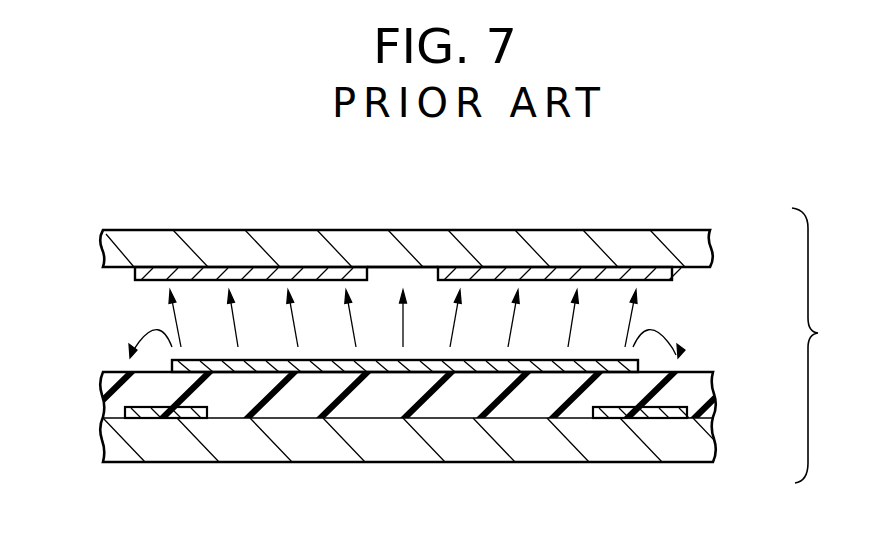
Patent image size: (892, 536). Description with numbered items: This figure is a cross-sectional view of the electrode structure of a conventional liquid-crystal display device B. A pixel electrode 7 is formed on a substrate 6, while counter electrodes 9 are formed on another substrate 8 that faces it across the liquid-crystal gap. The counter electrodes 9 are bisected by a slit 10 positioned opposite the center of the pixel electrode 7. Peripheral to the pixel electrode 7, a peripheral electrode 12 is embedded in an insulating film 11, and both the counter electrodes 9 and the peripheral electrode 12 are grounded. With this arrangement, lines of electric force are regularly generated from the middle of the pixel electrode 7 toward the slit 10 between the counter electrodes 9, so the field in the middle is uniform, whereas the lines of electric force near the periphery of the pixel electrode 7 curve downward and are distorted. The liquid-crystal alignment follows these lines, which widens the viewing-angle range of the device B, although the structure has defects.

The substrate 6 is at (439, 444).
The pixel electrode 7 is at (320, 368).
The substrate 8 is at (690, 247).
The counter electrodes 9 is at (162, 281).
The slit 10 is at (393, 240).
The insulating film 11 is at (700, 372).
The peripheral electrode 12 is at (163, 410).
The liquid-crystal display device B is at (821, 345).